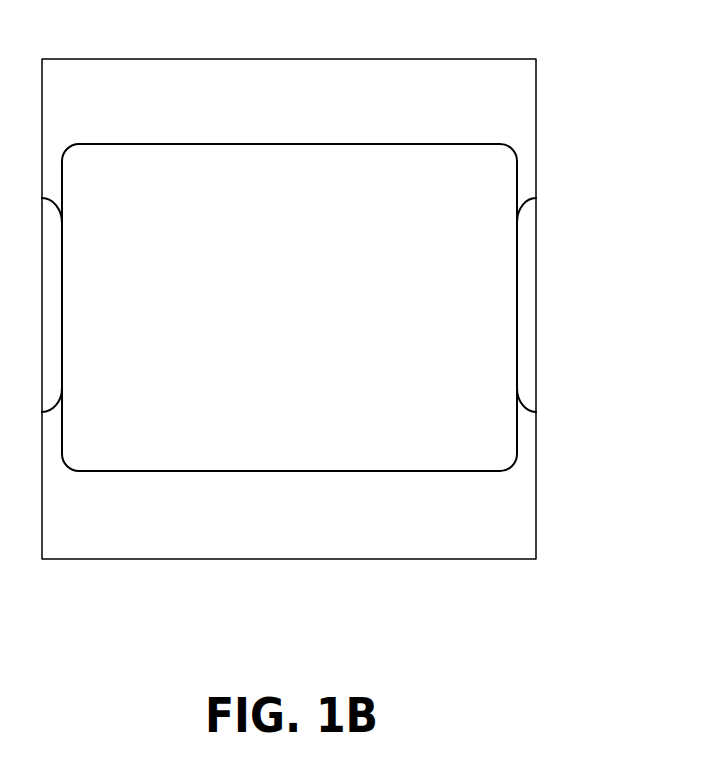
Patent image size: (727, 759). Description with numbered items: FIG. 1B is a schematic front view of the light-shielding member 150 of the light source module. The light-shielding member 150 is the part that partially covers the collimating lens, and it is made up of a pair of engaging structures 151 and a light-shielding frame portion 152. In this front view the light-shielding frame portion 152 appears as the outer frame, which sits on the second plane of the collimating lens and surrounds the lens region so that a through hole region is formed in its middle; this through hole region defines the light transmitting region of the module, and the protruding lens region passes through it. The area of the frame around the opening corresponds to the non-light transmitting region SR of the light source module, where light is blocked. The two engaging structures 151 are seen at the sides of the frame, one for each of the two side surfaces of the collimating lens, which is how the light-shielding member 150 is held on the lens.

The light-shielding member 150 is at (620, 633).
The engaging structures 151 is at (525, 366).
The light-shielding frame portion 152 is at (525, 96).
The non-light transmitting region SR is at (254, 92).